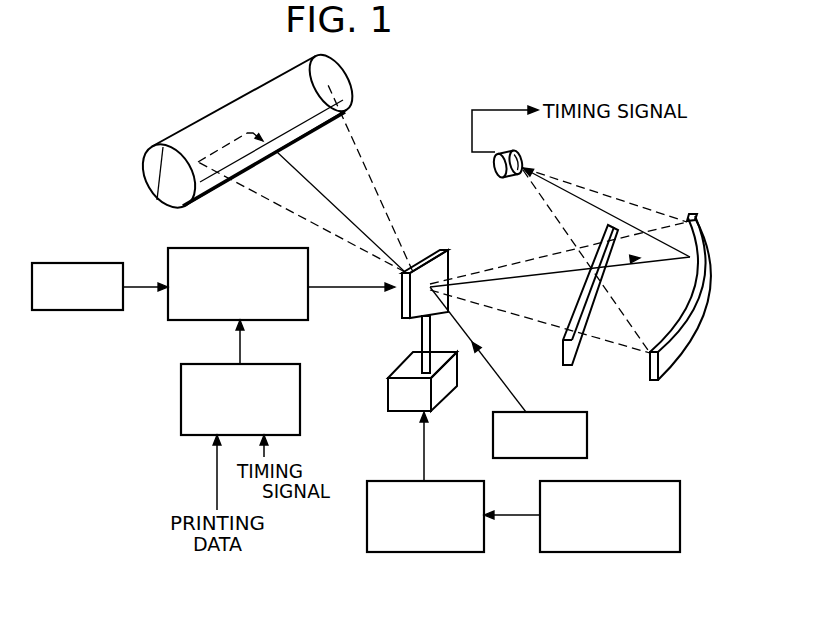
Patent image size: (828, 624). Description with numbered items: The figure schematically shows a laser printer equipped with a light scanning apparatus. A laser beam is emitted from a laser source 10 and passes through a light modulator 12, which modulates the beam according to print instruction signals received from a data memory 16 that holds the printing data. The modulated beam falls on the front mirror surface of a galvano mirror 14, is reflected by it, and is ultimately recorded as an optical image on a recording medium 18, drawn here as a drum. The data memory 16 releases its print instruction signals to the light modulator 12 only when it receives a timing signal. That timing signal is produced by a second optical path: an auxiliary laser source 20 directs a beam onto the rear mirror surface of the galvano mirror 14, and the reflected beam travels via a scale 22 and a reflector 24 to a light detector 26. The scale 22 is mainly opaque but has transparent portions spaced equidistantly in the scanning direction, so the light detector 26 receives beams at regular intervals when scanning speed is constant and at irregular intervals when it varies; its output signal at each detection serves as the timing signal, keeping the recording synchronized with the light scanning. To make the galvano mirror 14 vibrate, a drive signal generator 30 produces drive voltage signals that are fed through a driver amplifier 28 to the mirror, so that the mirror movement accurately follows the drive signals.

The laser source 10 is at (82, 310).
The light modulator 12 is at (278, 320).
The galvano mirror 14 is at (403, 318).
The data memory 16 is at (181, 420).
The recording medium 18 is at (350, 100).
The auxiliary laser source 20 is at (587, 442).
The scale 22 is at (568, 365).
The reflector 24 is at (670, 366).
The light detector 26 is at (492, 172).
The driver amplifier 28 is at (425, 552).
The drive signal generator 30 is at (613, 552).